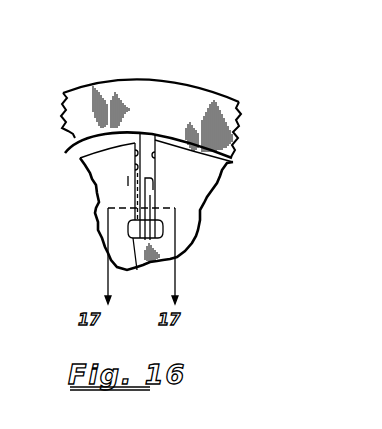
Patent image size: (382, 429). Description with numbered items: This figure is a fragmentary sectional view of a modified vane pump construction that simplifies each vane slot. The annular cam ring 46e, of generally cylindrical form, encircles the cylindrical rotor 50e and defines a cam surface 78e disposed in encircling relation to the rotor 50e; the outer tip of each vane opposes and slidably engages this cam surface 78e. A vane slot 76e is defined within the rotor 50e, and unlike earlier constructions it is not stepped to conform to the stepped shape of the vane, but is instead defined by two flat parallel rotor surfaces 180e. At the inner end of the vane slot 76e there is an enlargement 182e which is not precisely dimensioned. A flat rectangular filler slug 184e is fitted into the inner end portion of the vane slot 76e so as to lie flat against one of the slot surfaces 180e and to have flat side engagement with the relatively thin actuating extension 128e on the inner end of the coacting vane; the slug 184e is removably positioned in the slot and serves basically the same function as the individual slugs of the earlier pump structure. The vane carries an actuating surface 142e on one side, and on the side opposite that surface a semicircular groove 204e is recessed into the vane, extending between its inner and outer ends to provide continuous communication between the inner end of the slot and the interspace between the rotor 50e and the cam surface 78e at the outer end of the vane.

The cam ring 46e is at (167, 102).
The cam surface 78e is at (66, 152).
The rotor 50e is at (208, 183).
The vane slot 76e is at (133, 152).
The flat parallel rotor surfaces 180e is at (133, 167).
The semicircular groove 204e is at (128, 180).
The actuating extension 128e is at (137, 195).
The actuating surface 142e is at (153, 187).
The filler slug 184e is at (150, 225).
The enlargement 182e is at (137, 266).